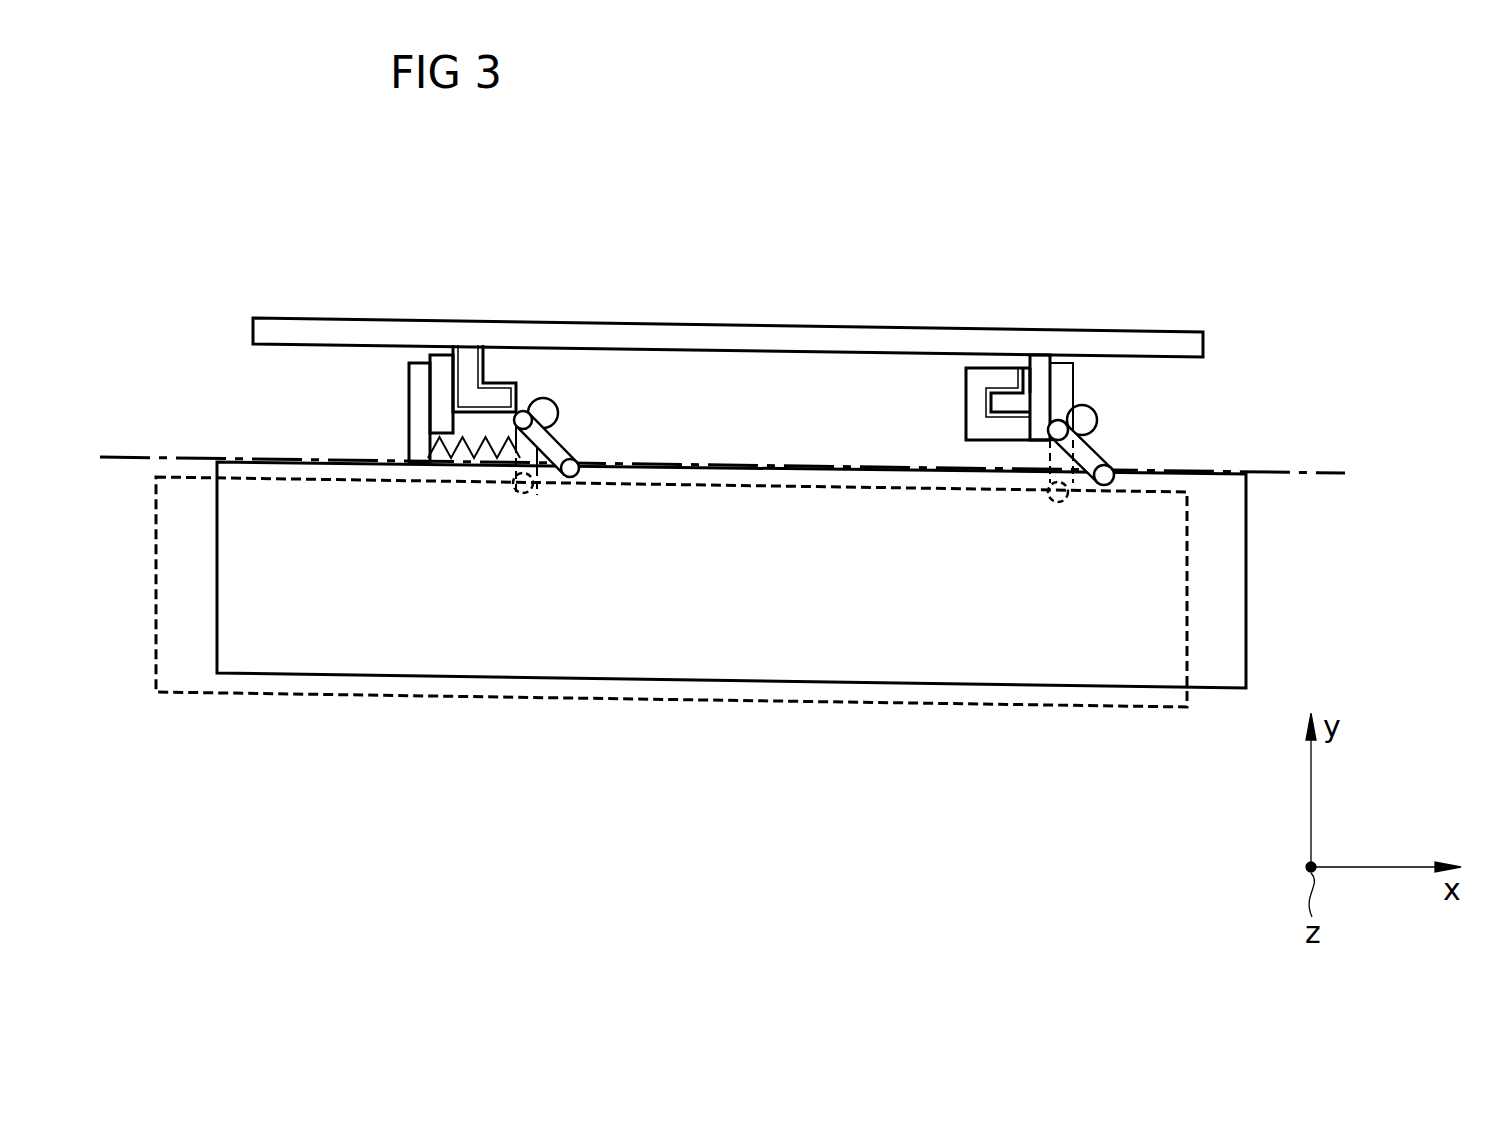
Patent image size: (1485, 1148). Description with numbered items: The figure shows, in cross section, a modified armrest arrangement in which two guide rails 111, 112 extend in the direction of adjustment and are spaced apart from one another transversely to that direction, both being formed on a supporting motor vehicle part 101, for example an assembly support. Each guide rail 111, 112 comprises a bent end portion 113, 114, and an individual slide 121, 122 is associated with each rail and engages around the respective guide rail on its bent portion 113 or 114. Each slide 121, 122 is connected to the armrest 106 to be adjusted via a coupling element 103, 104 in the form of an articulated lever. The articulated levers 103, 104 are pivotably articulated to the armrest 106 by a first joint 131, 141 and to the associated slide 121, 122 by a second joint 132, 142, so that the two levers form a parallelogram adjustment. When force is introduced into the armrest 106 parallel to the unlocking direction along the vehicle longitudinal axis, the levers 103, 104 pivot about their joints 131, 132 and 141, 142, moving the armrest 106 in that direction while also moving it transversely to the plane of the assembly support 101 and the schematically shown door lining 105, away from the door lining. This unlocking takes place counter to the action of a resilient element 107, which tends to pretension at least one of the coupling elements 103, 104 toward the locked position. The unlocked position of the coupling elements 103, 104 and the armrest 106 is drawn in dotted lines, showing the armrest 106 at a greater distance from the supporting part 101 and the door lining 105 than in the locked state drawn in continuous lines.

The supporting motor vehicle part 101 is at (713, 330).
The coupling element 103 is at (1088, 453).
The coupling element 104 is at (552, 443).
The door lining 105 is at (1312, 472).
The armrest 106 is at (692, 683).
The resilient element 107 is at (478, 460).
The guide rail 111 is at (1037, 373).
The guide rail 112 is at (464, 360).
The bent portion 113 is at (1010, 402).
The bent portion 114 is at (496, 394).
The slide 121 is at (975, 394).
The slide 122 is at (526, 387).
The first joint 131 is at (1103, 478).
The second joint 132 is at (1062, 427).
The first joint 141 is at (568, 477).
The second joint 142 is at (532, 420).